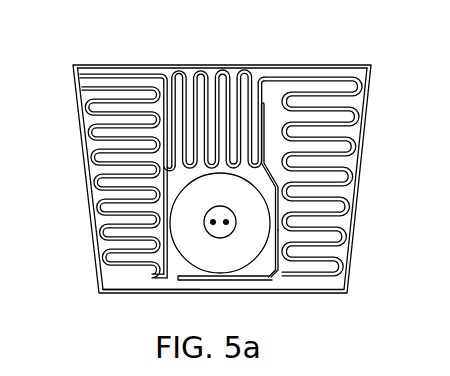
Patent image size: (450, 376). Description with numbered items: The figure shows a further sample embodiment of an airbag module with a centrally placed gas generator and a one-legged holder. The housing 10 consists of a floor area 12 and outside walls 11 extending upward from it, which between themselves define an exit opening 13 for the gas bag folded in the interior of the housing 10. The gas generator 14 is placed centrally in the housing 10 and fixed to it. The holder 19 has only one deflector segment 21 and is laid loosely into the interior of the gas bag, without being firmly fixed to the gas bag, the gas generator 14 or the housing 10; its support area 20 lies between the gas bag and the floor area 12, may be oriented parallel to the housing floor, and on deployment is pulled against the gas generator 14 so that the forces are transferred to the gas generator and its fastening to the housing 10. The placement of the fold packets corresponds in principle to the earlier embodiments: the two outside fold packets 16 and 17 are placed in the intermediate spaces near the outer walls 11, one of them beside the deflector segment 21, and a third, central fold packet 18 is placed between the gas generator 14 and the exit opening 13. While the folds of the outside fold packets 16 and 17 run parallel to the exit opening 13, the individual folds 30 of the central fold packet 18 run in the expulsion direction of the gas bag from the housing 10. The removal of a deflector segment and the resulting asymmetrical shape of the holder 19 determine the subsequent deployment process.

The housing 10 is at (97, 292).
The outside walls 11 is at (78, 113).
The floor area 12 is at (105, 293).
The exit opening 13 is at (125, 66).
The gas generator 14 is at (190, 244).
The outside fold packet 16 is at (110, 112).
The outside fold packet 17 is at (337, 113).
The central fold packet 18 is at (192, 117).
The holder 19 is at (276, 271).
The support area 20 is at (242, 281).
The deflector segment 21 is at (333, 231).
The individual folds 30 is at (112, 172).